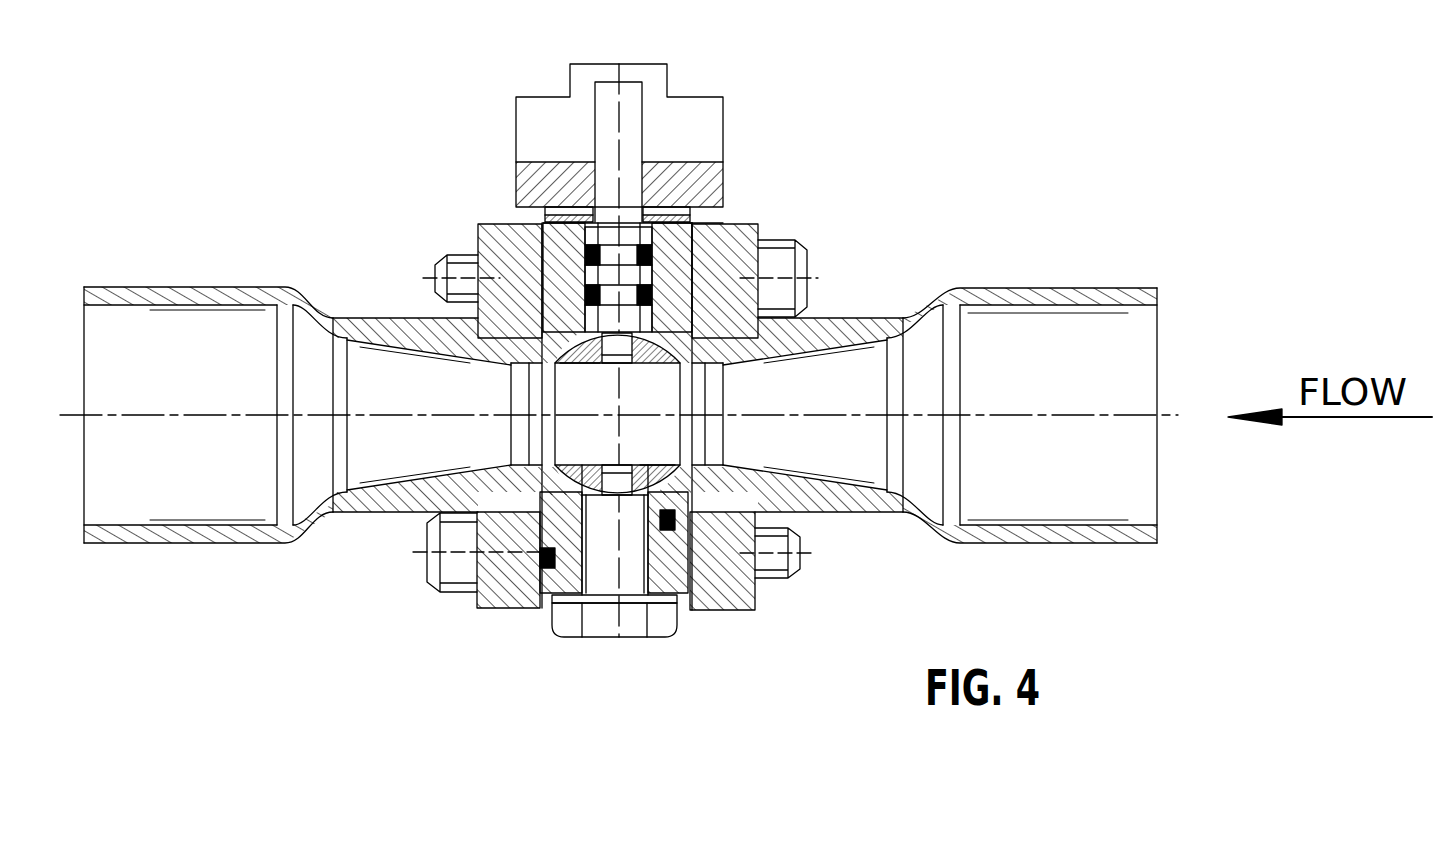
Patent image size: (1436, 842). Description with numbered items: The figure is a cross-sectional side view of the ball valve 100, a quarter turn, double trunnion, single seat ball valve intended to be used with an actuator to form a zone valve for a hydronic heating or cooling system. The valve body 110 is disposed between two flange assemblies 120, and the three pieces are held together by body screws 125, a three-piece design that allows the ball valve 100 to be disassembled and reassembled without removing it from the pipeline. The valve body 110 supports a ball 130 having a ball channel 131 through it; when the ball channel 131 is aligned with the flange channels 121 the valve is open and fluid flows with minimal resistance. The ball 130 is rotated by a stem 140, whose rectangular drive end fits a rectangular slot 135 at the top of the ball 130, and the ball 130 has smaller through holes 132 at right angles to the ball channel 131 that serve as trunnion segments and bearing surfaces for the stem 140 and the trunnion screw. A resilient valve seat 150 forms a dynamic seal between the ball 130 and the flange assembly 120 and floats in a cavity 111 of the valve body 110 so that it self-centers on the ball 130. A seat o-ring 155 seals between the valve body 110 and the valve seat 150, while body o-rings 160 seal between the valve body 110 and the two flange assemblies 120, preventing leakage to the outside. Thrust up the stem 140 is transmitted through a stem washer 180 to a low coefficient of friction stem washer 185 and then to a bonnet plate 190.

The ball valve 100 is at (855, 151).
The valve body 110 is at (548, 584).
The cavity 111 is at (704, 236).
The flange assembly 120 is at (478, 244).
The flange channel 121 is at (82, 496).
The body screw 125 is at (785, 268).
The ball 130 is at (458, 342).
The ball channel 131 is at (572, 434).
The smaller through holes 132 is at (648, 463).
The rectangular slot 135 is at (593, 352).
The stem 140 is at (637, 90).
The valve seat 150 is at (702, 226).
The seat o-ring 155 is at (660, 528).
The body o-ring 160 is at (538, 556).
The stem washer 180 is at (540, 222).
The low coefficient of friction stem washer 185 is at (572, 212).
The bonnet plate 190 is at (700, 210).